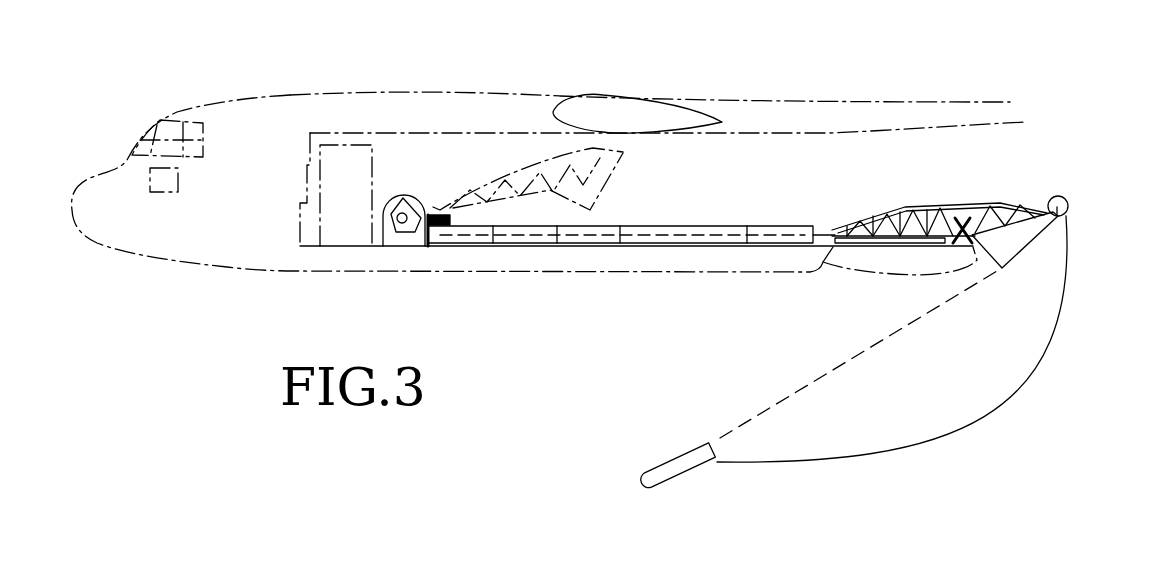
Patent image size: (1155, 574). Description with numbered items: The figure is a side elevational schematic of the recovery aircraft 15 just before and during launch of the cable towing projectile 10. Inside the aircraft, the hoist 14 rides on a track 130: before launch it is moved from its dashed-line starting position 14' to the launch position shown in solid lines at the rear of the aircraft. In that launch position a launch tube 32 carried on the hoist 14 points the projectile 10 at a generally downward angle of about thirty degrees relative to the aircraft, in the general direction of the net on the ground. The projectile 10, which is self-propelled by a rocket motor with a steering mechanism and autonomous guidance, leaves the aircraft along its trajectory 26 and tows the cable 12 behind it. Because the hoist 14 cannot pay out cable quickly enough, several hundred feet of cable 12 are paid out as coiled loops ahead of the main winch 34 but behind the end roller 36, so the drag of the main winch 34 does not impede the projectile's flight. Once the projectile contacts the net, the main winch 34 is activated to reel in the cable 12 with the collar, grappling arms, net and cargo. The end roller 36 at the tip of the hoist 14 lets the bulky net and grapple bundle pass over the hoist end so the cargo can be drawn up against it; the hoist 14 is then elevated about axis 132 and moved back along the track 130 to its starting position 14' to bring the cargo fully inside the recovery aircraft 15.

The recovery aircraft 15 is at (290, 95).
The main winch 34 is at (408, 197).
The hoist starting position 14' is at (563, 179).
The track 130 is at (732, 226).
The axis 132 is at (830, 228).
The launch tube 32 is at (1020, 257).
The end roller 36 is at (1067, 207).
The hoist 14 is at (1079, 169).
The cable 12 is at (1073, 260).
The projectile trajectory 26 is at (783, 400).
The cable towing projectile 10 is at (662, 465).